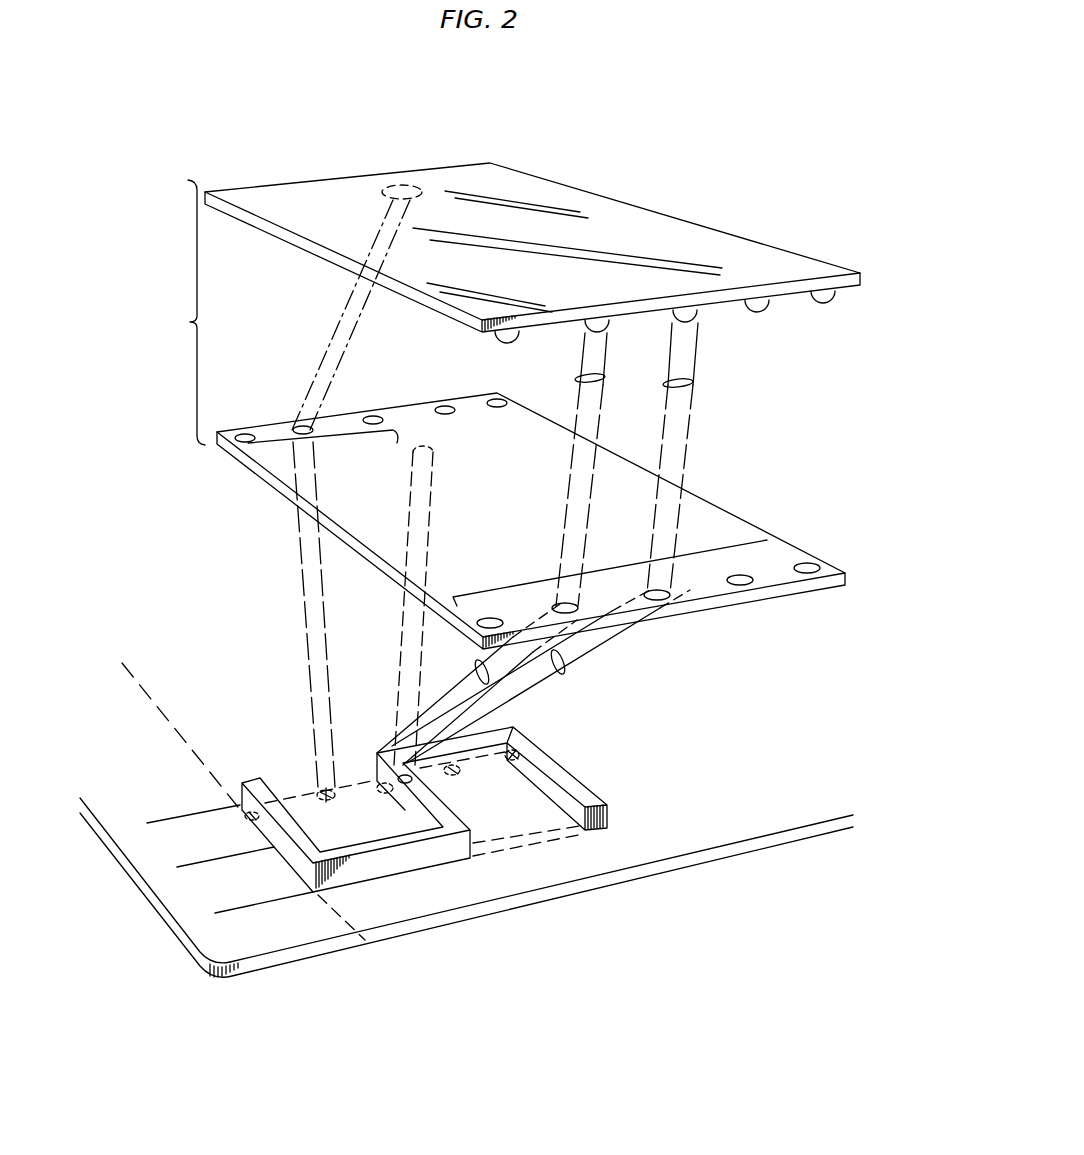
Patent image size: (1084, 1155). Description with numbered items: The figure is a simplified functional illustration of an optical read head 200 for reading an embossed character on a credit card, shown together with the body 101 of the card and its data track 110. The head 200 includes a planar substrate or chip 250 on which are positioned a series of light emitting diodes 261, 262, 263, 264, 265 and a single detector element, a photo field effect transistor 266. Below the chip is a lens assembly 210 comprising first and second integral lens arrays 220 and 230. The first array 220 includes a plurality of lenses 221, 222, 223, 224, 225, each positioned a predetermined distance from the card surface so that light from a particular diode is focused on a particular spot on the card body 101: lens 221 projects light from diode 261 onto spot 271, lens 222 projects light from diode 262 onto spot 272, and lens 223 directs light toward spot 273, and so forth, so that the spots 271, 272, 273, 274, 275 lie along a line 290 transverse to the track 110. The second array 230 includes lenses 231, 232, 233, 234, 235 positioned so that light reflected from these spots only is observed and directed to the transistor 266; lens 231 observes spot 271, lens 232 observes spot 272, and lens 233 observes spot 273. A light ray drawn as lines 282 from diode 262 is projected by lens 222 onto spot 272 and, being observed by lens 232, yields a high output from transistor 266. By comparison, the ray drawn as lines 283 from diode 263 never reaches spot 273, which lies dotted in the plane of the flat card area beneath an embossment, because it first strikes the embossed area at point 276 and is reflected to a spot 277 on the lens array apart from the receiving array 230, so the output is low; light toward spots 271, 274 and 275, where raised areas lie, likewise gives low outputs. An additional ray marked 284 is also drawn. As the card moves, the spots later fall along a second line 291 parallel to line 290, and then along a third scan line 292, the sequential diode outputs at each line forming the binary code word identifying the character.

The body of the credit card 101 is at (210, 938).
The track 110 is at (613, 832).
The optical read head 200 is at (197, 322).
The lens assembly 210 is at (638, 463).
The first lens array 220 is at (612, 560).
The lens 221 is at (490, 618).
The lens 222 is at (563, 604).
The lens 223 is at (655, 590).
The lens 224 is at (741, 575).
The lens 225 is at (808, 563).
The second lens array 230 is at (323, 451).
The lens 231 is at (244, 433).
The lens 232 is at (303, 425).
The lens 233 is at (373, 416).
The lens 234 is at (445, 406).
The lens 235 is at (500, 399).
The planar substrate or chip 250 is at (643, 218).
The light emitting diode 261 is at (515, 336).
The light emitting diode 262 is at (597, 318).
The light emitting diode 263 is at (685, 308).
The light emitting diode 264 is at (757, 312).
The light emitting diode 265 is at (828, 303).
The photo field effect transistor 266 is at (402, 184).
The spot 271 is at (248, 821).
The spot 272 is at (318, 811).
The spot 273 is at (378, 775).
The spot 274 is at (455, 773).
The spot 275 is at (500, 749).
The point on the embossed area 276 is at (399, 791).
The spot on the lens array 277 is at (435, 450).
The light ray lines 282 is at (605, 380).
The light ray lines 283 is at (565, 672).
The pivot pin 284 is at (694, 383).
The line 290 is at (182, 817).
The line 291 is at (203, 862).
The third scan line 292 is at (235, 910).